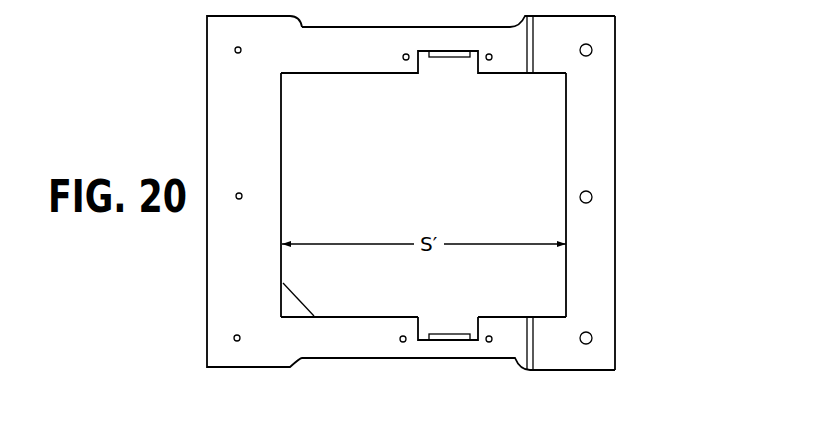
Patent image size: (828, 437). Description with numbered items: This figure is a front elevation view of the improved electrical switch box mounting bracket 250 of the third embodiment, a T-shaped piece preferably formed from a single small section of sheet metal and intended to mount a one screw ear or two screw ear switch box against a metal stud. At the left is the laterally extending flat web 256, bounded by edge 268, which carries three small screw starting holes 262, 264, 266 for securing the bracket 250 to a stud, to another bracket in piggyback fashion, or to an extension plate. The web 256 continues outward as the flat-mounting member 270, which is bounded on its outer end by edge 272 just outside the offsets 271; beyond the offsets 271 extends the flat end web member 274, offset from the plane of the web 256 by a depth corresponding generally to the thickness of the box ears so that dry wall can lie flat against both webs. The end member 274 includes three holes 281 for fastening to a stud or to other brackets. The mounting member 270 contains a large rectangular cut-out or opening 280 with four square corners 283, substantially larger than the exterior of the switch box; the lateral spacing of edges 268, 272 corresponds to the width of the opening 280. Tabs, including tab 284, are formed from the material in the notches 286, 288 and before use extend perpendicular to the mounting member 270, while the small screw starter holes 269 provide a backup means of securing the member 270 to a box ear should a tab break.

The electrical switch box mounting bracket 250 is at (628, 105).
The flat web 256 is at (230, 32).
The screw starting hole 262 is at (237, 192).
The screw starting hole 264 is at (234, 53).
The screw starting hole 266 is at (241, 338).
The edge 268 is at (281, 155).
The screw starter hole 269 is at (406, 60).
The flat-mounting member 270 is at (503, 52).
The offset 271 is at (527, 57).
The edge 272 is at (566, 146).
The flat end web member 274 is at (610, 158).
The opening 280 is at (306, 85).
The holes 281 is at (592, 49).
The square corners 283 is at (298, 297).
The tab 284 is at (450, 336).
The notch 286 is at (420, 65).
The notch 288 is at (423, 298).